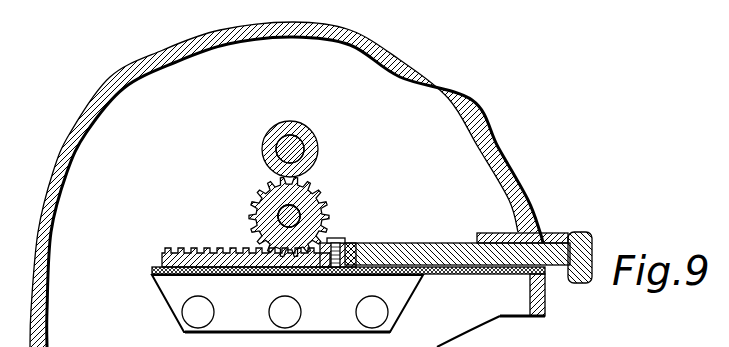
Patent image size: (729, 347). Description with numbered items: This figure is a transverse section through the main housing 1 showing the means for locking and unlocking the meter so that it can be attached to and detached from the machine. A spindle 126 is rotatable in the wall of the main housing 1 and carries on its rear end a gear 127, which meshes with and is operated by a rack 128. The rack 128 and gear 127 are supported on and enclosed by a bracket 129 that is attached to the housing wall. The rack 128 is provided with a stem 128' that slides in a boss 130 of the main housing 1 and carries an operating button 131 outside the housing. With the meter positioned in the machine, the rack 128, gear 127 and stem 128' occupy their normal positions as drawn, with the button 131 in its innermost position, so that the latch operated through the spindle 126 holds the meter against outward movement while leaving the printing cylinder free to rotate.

The main housing 1 is at (493, 133).
The spindle 126 is at (295, 210).
The gear 127 is at (318, 210).
The rack 128 is at (259, 236).
The stem 128' is at (457, 229).
The bracket 129 is at (185, 287).
The boss 130 is at (497, 233).
The operating button 131 is at (578, 232).